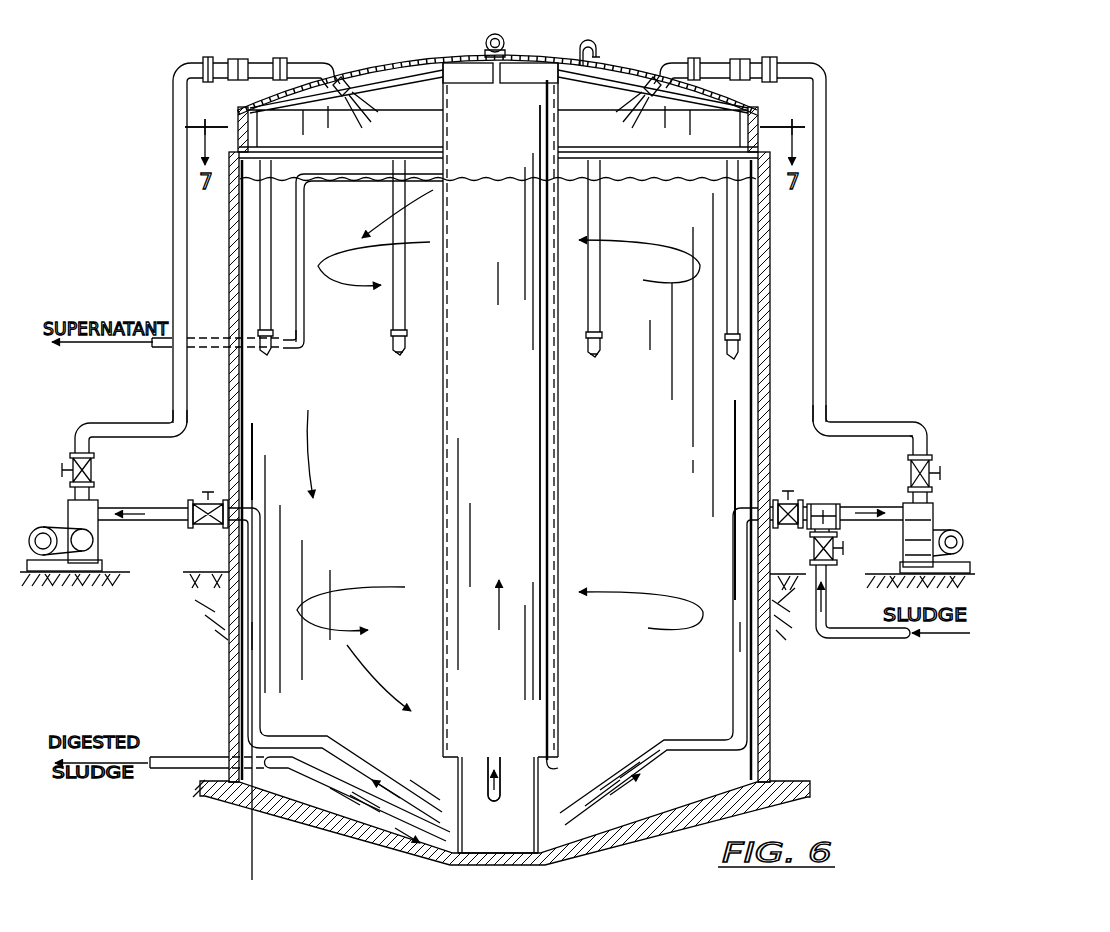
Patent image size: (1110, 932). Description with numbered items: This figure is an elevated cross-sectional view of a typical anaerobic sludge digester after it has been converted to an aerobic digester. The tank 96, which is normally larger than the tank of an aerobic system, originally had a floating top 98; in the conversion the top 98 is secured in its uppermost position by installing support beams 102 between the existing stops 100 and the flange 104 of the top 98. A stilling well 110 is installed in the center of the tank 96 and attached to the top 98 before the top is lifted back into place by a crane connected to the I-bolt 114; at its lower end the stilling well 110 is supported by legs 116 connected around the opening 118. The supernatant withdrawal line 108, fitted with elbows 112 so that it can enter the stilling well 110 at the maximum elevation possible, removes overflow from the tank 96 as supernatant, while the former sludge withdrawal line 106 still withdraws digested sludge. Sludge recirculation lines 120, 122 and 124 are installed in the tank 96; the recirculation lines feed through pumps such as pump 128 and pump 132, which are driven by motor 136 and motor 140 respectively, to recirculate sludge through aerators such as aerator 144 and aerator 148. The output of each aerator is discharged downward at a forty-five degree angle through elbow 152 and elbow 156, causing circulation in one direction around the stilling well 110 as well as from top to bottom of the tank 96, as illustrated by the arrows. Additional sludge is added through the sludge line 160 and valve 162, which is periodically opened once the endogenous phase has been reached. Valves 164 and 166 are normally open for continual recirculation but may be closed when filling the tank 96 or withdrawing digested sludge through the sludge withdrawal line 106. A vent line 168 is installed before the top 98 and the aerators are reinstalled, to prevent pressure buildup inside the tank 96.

The tank 96 is at (771, 433).
The top 98 is at (418, 62).
The stops 100 is at (403, 355).
The support beams 102 is at (392, 316).
The flange 104 is at (648, 147).
The sludge withdrawal line 106 is at (188, 756).
The supernatant withdrawal line 108 is at (352, 183).
The stilling well 110 is at (514, 459).
The elbows 112 is at (309, 186).
The I-bolt 114 is at (504, 43).
The legs 116 is at (536, 826).
The opening 118 is at (554, 768).
The sludge recirculation line 120 is at (683, 740).
The sludge recirculation line 122 is at (485, 777).
The sludge recirculation line 124 is at (320, 735).
The pump 128 is at (903, 546).
The pump 132 is at (99, 524).
The motor 136 is at (952, 529).
The motor 140 is at (43, 527).
The aerator 144 is at (735, 62).
The aerator 148 is at (253, 62).
The elbow 152 is at (656, 70).
The elbow 156 is at (307, 63).
The sludge line 160 is at (862, 640).
The valve 162 is at (812, 550).
The valve 164 is at (789, 498).
The valve 166 is at (907, 468).
The vent line 168 is at (596, 47).